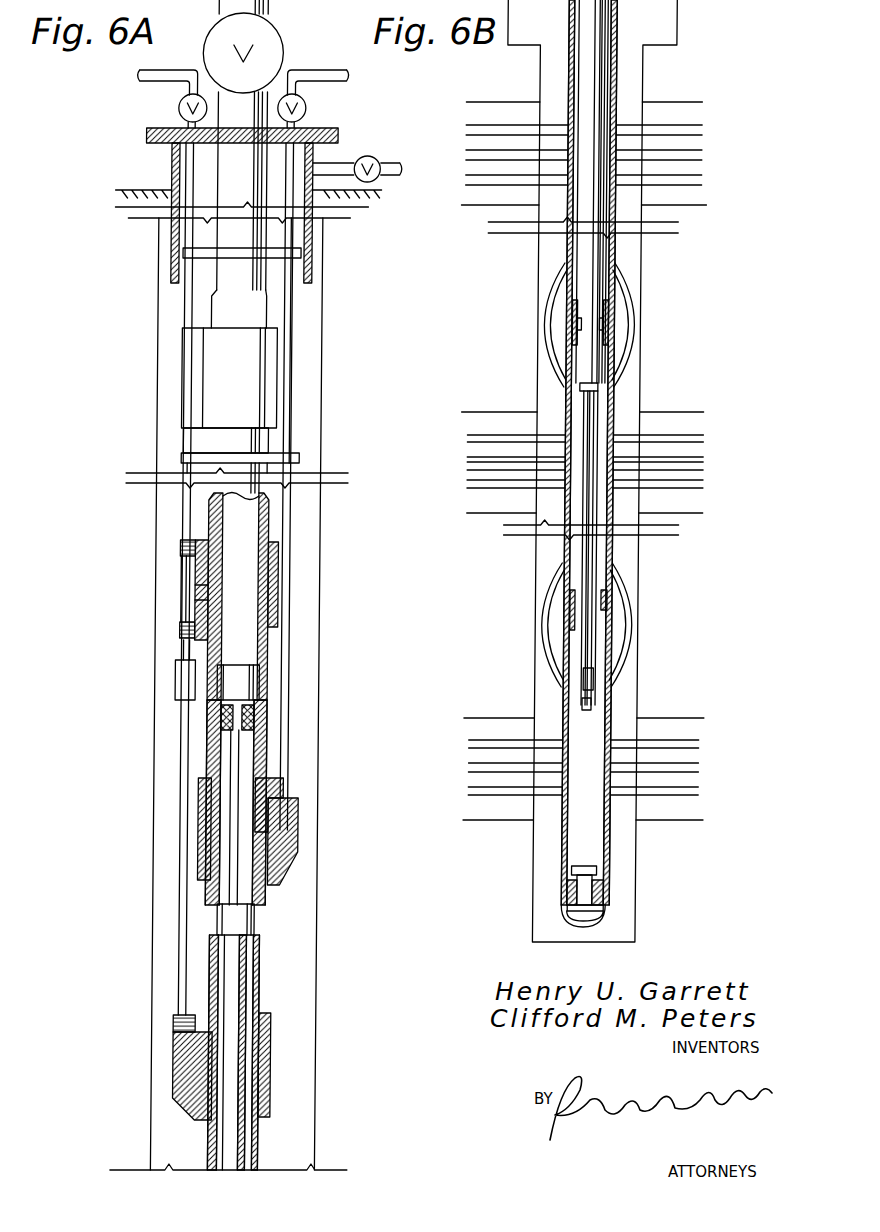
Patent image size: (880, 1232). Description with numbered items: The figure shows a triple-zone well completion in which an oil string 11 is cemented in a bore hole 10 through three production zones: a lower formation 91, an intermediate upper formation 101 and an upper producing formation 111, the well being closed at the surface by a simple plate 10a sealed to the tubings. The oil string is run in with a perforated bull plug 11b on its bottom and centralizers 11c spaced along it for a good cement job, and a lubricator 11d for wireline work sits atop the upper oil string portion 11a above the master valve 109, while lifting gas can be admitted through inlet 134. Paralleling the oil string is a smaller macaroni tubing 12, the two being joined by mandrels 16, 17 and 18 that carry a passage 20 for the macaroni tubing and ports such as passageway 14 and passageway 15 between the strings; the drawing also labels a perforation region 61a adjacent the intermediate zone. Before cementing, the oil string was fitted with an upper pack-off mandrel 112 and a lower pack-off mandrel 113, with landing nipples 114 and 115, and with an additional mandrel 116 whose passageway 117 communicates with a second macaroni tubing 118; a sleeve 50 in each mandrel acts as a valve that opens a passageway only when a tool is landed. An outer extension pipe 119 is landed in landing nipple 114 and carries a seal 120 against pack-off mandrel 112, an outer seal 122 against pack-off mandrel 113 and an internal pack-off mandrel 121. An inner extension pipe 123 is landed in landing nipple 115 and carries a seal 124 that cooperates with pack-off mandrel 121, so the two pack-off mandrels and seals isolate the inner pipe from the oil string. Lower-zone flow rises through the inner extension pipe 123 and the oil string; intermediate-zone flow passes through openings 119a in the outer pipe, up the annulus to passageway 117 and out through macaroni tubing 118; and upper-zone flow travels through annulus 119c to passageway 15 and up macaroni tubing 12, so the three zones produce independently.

In FIG. 6A, the bore hole 10 is at (320, 268).
In FIG. 6B, the bore hole 10 is at (639, 254).
In FIG. 6A, the plate 10a is at (330, 128).
In FIG. 6A, the oil string 11 is at (206, 494).
In FIG. 6B, the upper oil string portion 11a is at (598, 890).
In FIG. 6B, the perforated bull plug 11b is at (604, 910).
In FIG. 6B, the centralizers 11c is at (630, 367).
In FIG. 6A, the lubricator 11d is at (263, 12).
In FIG. 6A, the macaroni tubing 12 is at (186, 435).
In FIG. 6A, the passageway 14 is at (196, 604).
In FIG. 6A, the passageway 15 is at (200, 1072).
In FIG. 6A, the mandrel 16 is at (182, 367).
In FIG. 6A, the mandrel 17 is at (178, 618).
In FIG. 6A, the mandrel 18 is at (182, 1090).
In FIG. 6A, the passage 20 is at (184, 572).
In FIG. 6A, the sleeve 50 is at (278, 567).
In FIG. 6B, the perforation zone 61a is at (680, 466).
In FIG. 6B, the lower formation 91 is at (483, 718).
In FIG. 6B, the upper formation 101 is at (476, 412).
In FIG. 6A, the master valve 109 is at (279, 46).
In FIG. 6B, the upper producing formation 111 is at (668, 106).
In FIG. 6B, the upper pack-off mandrel 112 is at (612, 307).
In FIG. 6B, the lower pack-off mandrel 113 is at (570, 606).
In FIG. 6A, the landing nipple 114 is at (254, 922).
In FIG. 6A, the landing nipple 115 is at (260, 680).
In FIG. 6A, the mandrel 116 is at (296, 856).
In FIG. 6A, the passageway 117 is at (272, 828).
In FIG. 6A, the macaroni tubing 118 is at (290, 382).
In FIG. 6A, the outer extension pipe 119 is at (232, 1147).
In FIG. 6B, the outer extension pipe 119 is at (588, 262).
In FIG. 6B, the openings 119a is at (598, 437).
In FIG. 6A, the annulus 119c is at (222, 1130).
In FIG. 6B, the annulus 119c is at (603, 78).
In FIG. 6B, the seal 120 is at (601, 326).
In FIG. 6B, the internal pack-off mandrel 121 is at (590, 705).
In FIG. 6B, the outer seal 122 is at (605, 600).
In FIG. 6A, the inner extension pipe 123 is at (236, 778).
In FIG. 6B, the inner extension pipe 123 is at (590, 640).
In FIG. 6B, the seal 124 is at (593, 673).
In FIG. 6A, the inlet 134 is at (386, 162).